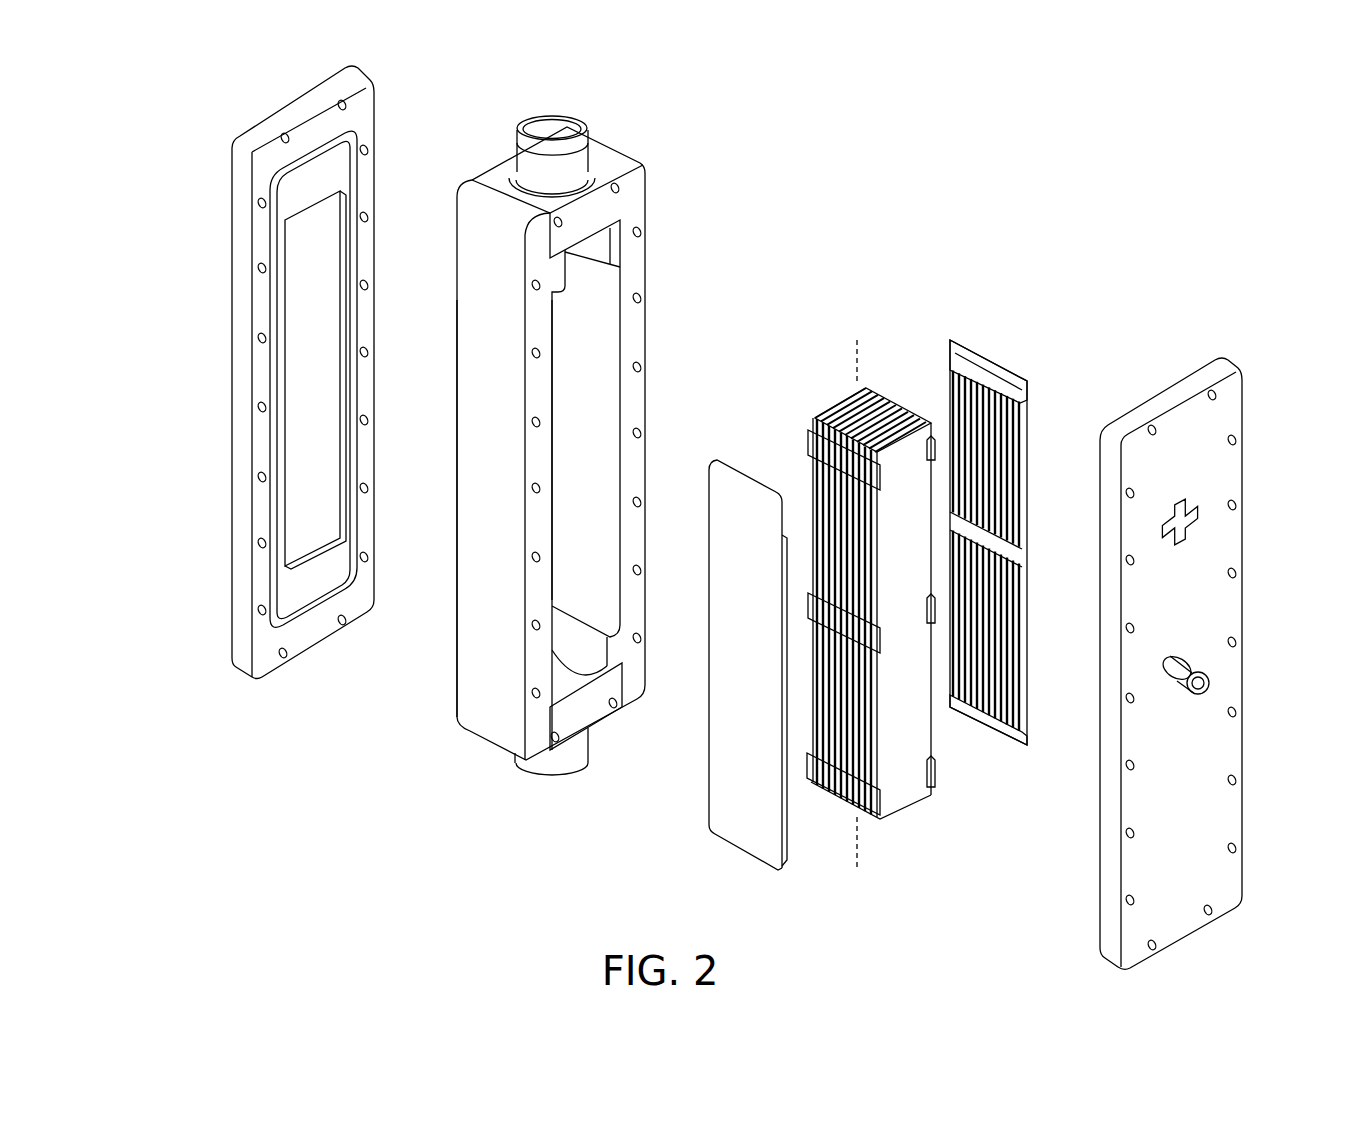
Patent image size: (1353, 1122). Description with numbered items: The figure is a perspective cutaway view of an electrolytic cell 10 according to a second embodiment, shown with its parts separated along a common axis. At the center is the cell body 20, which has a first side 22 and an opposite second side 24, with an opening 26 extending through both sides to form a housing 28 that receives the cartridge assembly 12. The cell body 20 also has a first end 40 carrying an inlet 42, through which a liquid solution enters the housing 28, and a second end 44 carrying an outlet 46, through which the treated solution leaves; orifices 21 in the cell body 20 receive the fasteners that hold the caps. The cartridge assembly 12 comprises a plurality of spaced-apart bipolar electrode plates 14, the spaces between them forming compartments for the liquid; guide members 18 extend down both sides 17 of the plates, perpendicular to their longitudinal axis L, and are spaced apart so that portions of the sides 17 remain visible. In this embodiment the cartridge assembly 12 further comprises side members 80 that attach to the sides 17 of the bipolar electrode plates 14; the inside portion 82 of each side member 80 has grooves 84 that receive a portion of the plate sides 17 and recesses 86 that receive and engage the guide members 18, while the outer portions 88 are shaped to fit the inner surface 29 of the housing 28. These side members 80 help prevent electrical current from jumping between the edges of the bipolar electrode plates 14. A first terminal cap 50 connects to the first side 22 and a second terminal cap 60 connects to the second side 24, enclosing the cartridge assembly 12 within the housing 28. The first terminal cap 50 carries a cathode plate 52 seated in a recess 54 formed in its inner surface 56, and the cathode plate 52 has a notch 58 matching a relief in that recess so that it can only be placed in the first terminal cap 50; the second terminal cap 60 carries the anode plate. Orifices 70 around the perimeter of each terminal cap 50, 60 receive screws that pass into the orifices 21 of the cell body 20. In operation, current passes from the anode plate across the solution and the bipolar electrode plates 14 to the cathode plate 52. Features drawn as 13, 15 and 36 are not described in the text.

The electrolytic cell 10 is at (300, 835).
The cartridge assembly 12 is at (825, 378).
The top end of core 13 is at (868, 395).
The bipolar electrode plates 14 is at (895, 780).
The locating tab 15 is at (913, 797).
The sides 17 is at (812, 462).
The guide members 18 is at (812, 440).
The cell body 20 is at (706, 140).
The orifices 21 is at (535, 555).
The first side 22 is at (457, 620).
The second side 24 is at (637, 250).
The opening 26 is at (614, 576).
The housing 28 is at (586, 422).
The inner surface 29 is at (603, 335).
The bottom bracket 36 is at (545, 673).
The first end 40 is at (510, 118).
The inlet 42 is at (553, 131).
The second end 44 is at (521, 795).
The outlet 46 is at (558, 775).
The first terminal cap 50 is at (250, 103).
The cathode plate 52 is at (303, 405).
The recess 54 is at (297, 168).
The inner surface 56 is at (258, 314).
The notch 58 is at (345, 193).
The second terminal cap 60 is at (1228, 358).
The orifices 70 is at (262, 268).
The side members 80 is at (725, 850).
The inside portion 82 is at (787, 800).
The grooves 84 is at (943, 373).
The recesses 86 is at (1022, 545).
The outer portions 88 is at (718, 508).